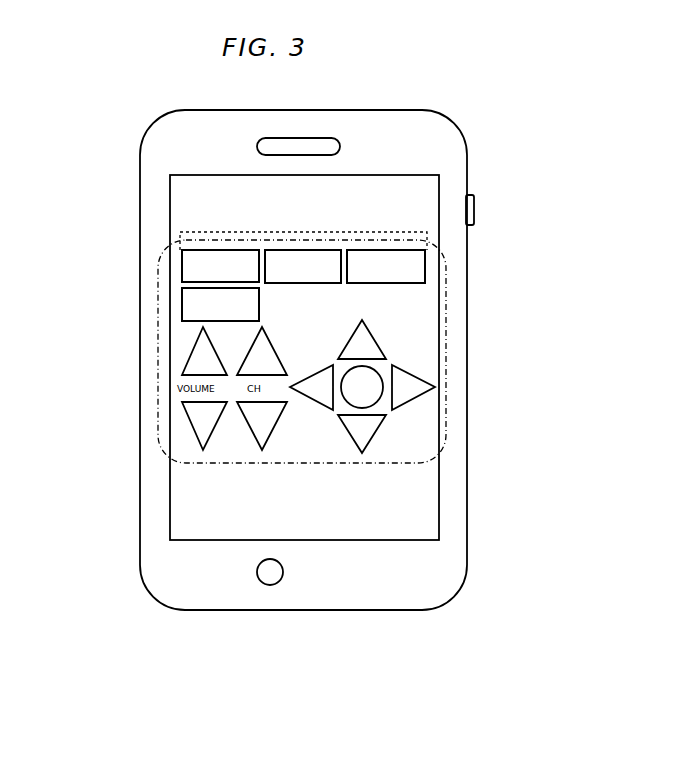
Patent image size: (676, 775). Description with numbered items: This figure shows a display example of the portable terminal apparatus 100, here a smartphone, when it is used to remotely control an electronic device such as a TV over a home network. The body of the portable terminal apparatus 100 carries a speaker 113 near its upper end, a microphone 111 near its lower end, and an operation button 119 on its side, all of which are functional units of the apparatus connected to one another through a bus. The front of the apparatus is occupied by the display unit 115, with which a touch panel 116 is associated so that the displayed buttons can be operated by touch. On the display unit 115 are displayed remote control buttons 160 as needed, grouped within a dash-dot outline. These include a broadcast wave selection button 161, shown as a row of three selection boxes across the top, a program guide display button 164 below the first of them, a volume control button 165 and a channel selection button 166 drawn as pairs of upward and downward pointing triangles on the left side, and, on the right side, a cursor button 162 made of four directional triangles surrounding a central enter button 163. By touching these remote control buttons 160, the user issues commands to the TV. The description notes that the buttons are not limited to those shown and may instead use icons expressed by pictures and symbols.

The portable terminal apparatus 100 is at (373, 610).
The microphone 111 is at (264, 585).
The speaker 113 is at (300, 136).
The display unit 115 is at (243, 362).
The touch panel 116 is at (170, 512).
The operation button 119 is at (475, 205).
The remote control buttons 160 is at (158, 376).
The broadcast wave selection button 161 is at (302, 232).
The cursor button 162 is at (435, 380).
The enter button 163 is at (376, 371).
The program guide display button 164 is at (182, 300).
The volume control button 165 is at (186, 424).
The channel selection button 166 is at (273, 430).